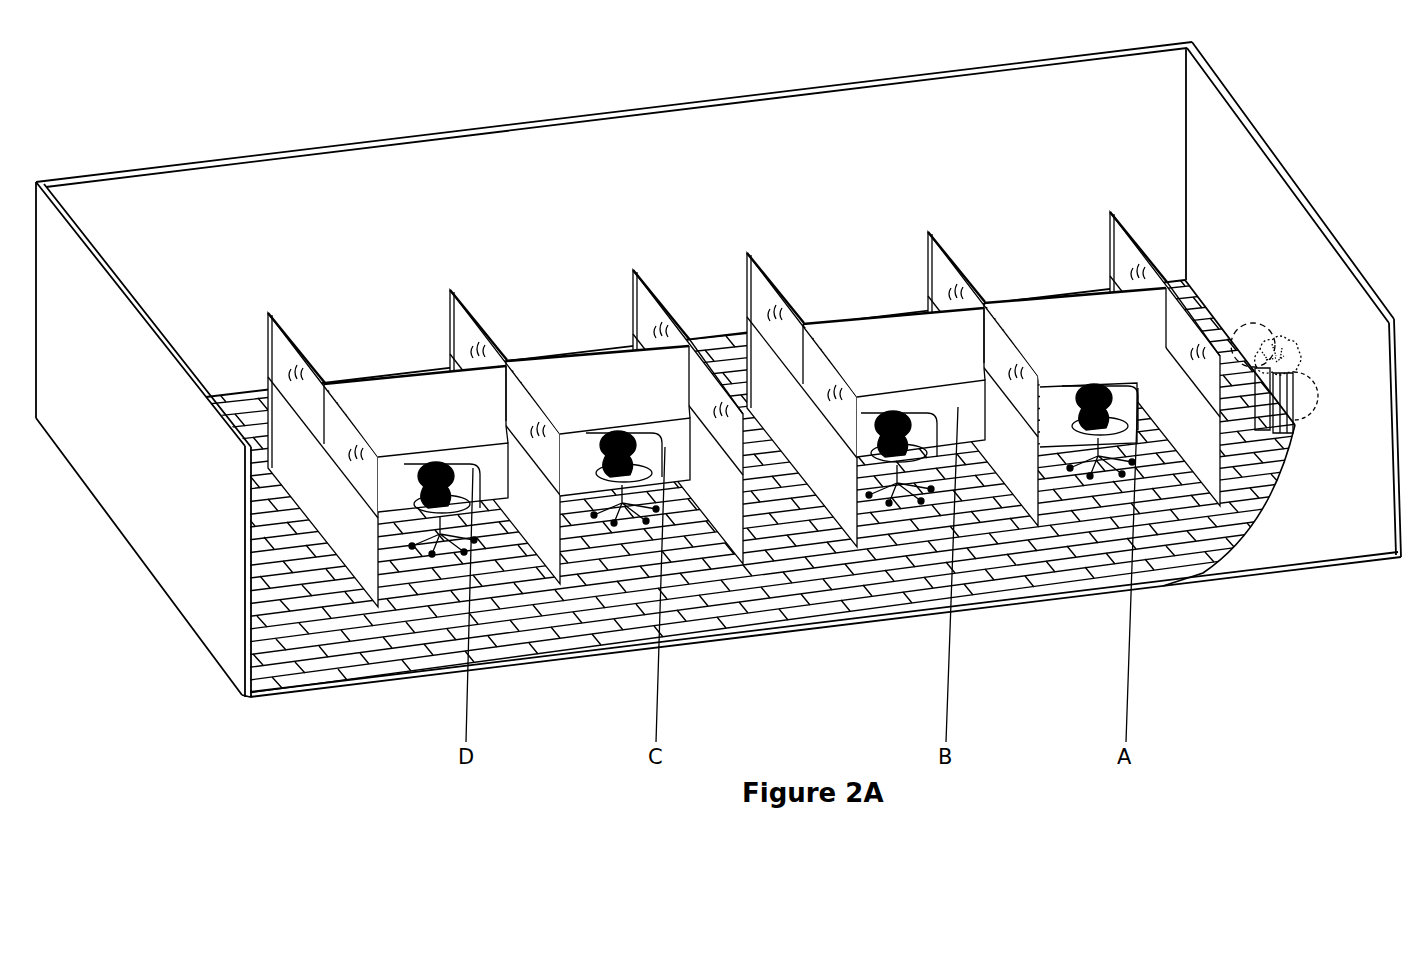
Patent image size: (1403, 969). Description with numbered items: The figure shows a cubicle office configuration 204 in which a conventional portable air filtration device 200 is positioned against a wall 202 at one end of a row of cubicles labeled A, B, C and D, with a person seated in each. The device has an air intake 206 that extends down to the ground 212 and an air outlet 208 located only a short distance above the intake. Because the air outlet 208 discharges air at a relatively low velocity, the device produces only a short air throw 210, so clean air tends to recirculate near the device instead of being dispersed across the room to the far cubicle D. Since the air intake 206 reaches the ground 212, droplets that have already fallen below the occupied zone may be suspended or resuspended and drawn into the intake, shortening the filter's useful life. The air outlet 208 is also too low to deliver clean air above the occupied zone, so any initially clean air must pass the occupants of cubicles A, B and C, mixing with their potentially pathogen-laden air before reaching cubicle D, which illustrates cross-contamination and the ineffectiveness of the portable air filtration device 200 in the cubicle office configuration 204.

The portable air filtration device 200 is at (1338, 364).
The wall 202 is at (1235, 232).
The cubicle office configuration 204 is at (648, 98).
The air intake 206 is at (1283, 398).
The air outlet 208 is at (1283, 350).
The air throw 210 is at (1252, 320).
The ground 212 is at (1173, 533).